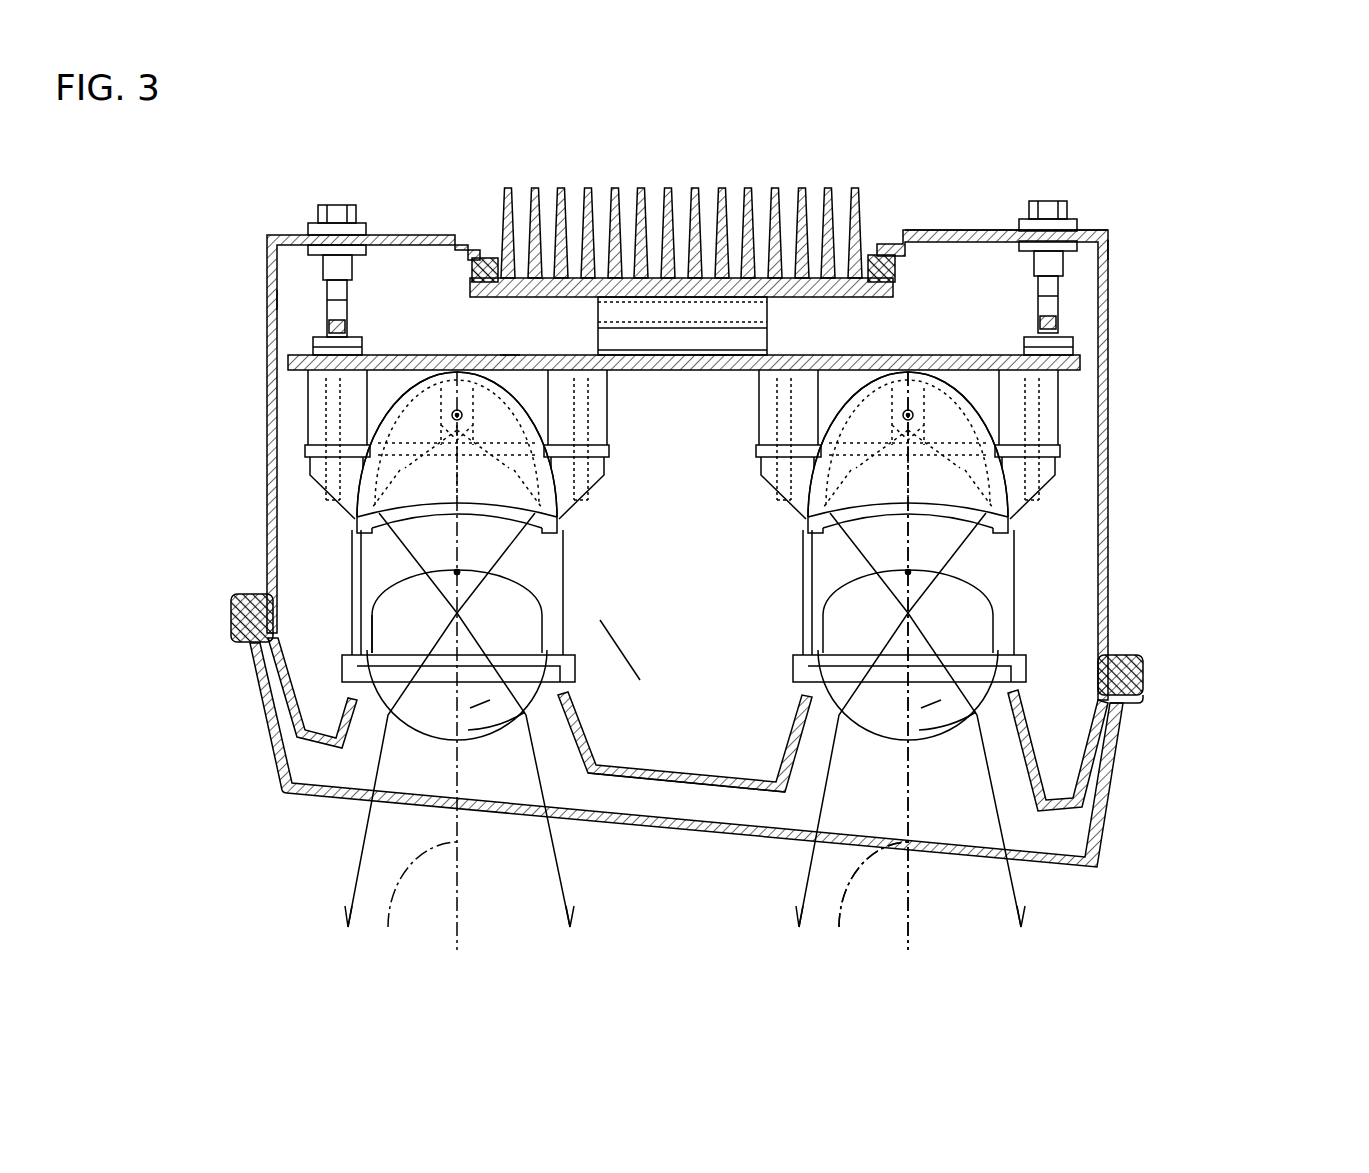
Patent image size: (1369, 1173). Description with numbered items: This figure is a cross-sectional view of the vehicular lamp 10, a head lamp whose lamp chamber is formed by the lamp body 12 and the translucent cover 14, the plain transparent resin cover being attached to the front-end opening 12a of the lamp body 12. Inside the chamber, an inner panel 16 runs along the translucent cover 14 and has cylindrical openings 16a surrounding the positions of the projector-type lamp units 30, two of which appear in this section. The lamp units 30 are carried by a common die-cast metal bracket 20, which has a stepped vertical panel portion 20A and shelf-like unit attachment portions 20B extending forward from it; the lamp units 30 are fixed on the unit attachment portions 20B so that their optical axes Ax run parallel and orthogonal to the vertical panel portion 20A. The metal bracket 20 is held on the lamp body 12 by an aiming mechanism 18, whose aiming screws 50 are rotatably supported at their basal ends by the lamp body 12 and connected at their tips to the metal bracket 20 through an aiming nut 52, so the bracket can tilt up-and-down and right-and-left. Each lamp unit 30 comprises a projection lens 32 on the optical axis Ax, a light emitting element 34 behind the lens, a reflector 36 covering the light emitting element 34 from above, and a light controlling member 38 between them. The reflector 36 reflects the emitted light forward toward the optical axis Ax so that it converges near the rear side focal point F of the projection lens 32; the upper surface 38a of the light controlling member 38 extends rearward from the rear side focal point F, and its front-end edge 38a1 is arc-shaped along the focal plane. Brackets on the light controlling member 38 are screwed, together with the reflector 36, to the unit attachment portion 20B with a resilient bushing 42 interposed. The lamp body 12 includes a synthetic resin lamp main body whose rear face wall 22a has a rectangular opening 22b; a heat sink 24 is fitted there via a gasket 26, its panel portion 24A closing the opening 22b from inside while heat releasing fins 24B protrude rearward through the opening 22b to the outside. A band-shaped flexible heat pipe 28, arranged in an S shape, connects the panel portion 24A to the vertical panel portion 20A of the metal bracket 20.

The vehicular lamp 10 is at (1190, 185).
The lamp body 12 is at (1132, 327).
The front-end opening 12a is at (1125, 700).
The translucent cover 14 is at (1110, 500).
The inner panel 16 is at (697, 786).
The openings 16a is at (572, 698).
The aiming mechanism 18 is at (307, 298).
The metal bracket 20 is at (998, 352).
The vertical panel portion 20A is at (720, 372).
The unit attachment portions 20B is at (548, 402).
The rear face wall 22a is at (968, 230).
The opening 22b is at (497, 253).
The heat sink 24 is at (744, 218).
The panel portion 24A is at (870, 297).
The heat releasing fins 24B is at (800, 186).
The gasket 26 is at (896, 276).
The flexible heat pipe 28 is at (748, 340).
The lamp units 30 is at (1050, 582).
The projection lens 32 is at (487, 706).
The light emitting element 34 is at (508, 354).
The reflector 36 is at (420, 418).
The light controlling member 38 is at (568, 555).
The upper surface 38a is at (428, 543).
The front-end edge 38a1 is at (372, 620).
The resilient bushing 42 is at (612, 455).
The aiming screws 50 is at (335, 268).
The aiming nut 52 is at (312, 345).
The rear side focal point F is at (462, 575).
The optical axis Ax is at (639, 667).